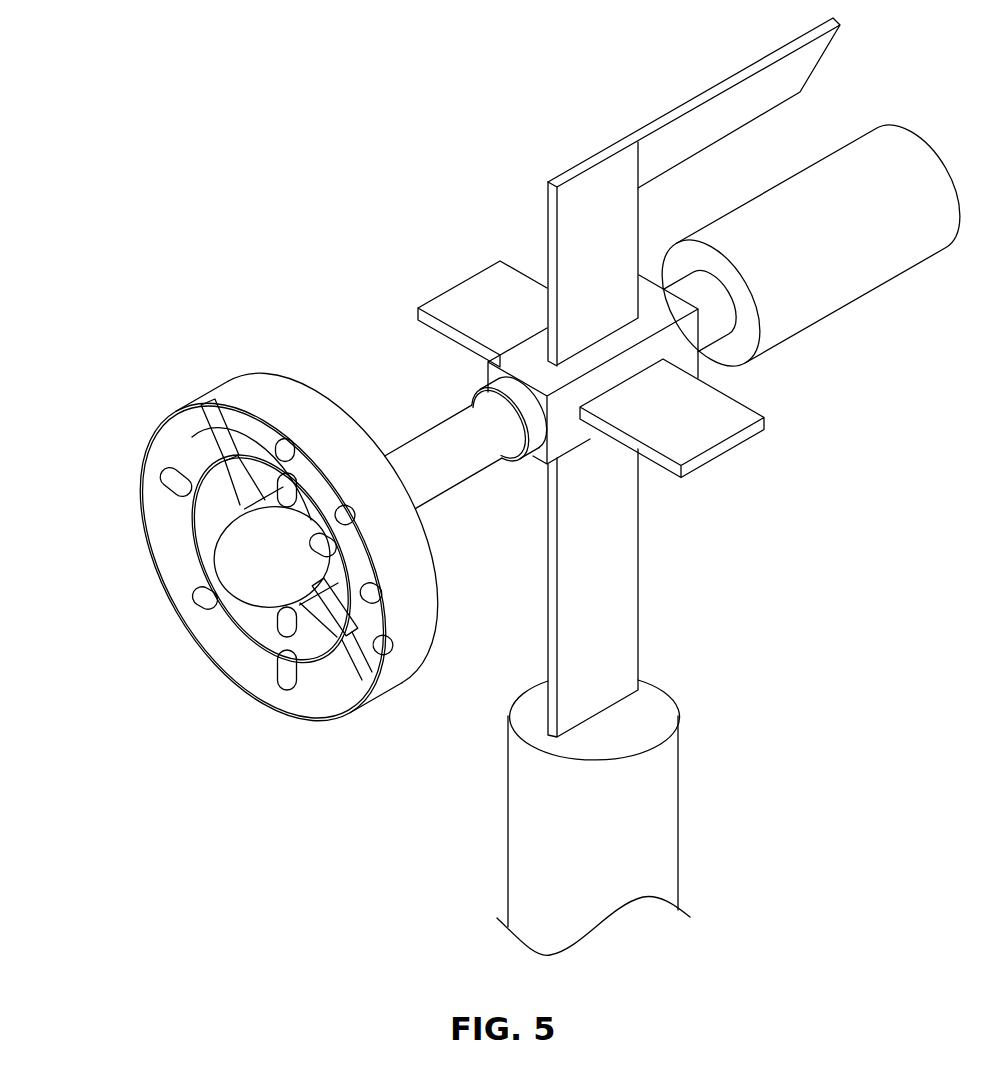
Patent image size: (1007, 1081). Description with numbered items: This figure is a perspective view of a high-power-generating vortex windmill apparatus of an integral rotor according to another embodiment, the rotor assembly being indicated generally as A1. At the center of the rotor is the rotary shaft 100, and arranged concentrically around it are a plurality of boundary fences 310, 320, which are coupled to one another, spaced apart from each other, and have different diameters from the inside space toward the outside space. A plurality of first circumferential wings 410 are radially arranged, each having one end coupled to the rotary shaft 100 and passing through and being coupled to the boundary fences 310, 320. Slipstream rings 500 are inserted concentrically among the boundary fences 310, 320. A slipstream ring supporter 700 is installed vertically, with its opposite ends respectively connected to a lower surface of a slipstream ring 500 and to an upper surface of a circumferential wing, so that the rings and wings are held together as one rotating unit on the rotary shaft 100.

The rotating assembly A1 is at (165, 336).
The rotary shaft 100 is at (460, 470).
The boundary fence 310 is at (248, 634).
The boundary fence 320 is at (298, 397).
The first circumferential wing 410 is at (193, 427).
The slipstream ring 500 is at (336, 650).
The slipstream ring supporter 700 is at (227, 410).